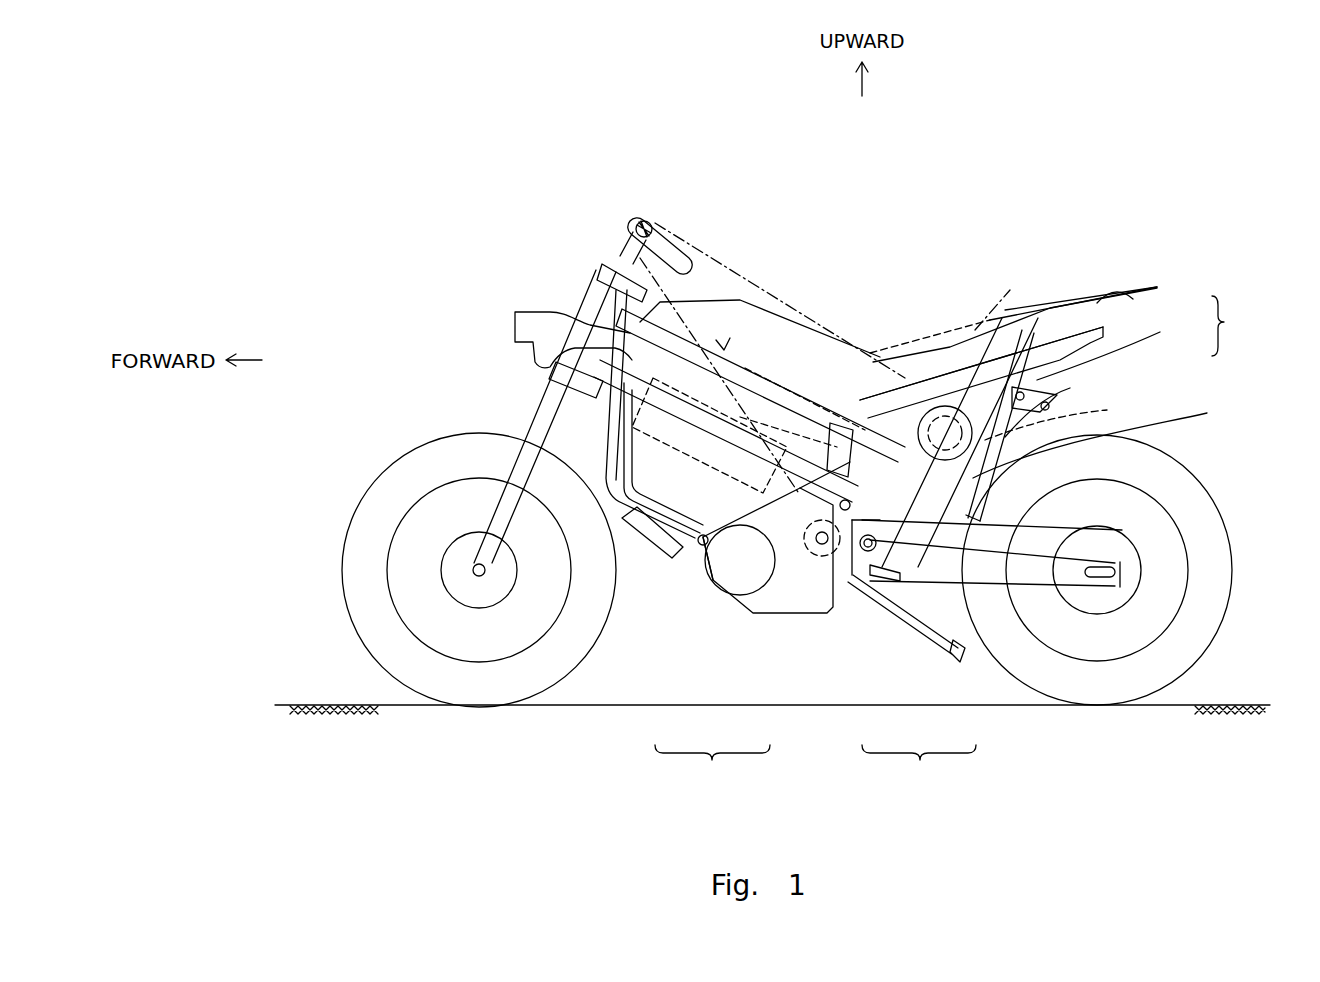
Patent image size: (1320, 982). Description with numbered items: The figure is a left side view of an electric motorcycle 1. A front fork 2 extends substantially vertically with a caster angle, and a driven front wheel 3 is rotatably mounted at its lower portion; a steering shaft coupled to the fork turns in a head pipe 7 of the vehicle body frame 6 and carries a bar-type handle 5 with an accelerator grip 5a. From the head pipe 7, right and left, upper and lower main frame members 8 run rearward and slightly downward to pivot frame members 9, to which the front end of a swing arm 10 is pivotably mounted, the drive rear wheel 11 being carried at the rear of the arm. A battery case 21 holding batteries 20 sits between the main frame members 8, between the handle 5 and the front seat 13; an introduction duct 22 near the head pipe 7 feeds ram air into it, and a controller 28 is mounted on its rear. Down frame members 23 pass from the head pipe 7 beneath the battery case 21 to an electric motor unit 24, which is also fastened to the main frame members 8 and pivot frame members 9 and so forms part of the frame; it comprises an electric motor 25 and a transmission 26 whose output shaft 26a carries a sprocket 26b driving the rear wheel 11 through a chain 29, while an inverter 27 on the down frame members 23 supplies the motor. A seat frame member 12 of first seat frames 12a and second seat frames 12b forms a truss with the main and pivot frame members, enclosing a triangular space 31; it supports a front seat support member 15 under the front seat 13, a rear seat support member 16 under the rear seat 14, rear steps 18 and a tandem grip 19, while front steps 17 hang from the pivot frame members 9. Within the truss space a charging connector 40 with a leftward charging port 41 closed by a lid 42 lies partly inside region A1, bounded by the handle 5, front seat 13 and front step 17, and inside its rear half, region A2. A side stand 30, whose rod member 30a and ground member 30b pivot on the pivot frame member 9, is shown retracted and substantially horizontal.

The electric motorcycle 1 is at (447, 215).
The front fork 2 is at (530, 422).
The front wheel 3 is at (370, 505).
The handle 5 is at (645, 225).
The accelerator grip 5a is at (668, 224).
The vehicle body frame 6 is at (725, 348).
The head pipe 7 is at (606, 282).
The main frame members 8 is at (800, 455).
The pivot frame members 9 is at (840, 578).
The swing arm 10 is at (900, 575).
The rear wheel 11 is at (1217, 507).
The seat frame member 12 is at (1226, 322).
The first seat frames 12a is at (1103, 332).
The second seat frames 12b is at (1110, 340).
The front seat 13 is at (884, 378).
The rear seat 14 is at (1040, 300).
The front seat support member 15 is at (927, 383).
The rear seat support member 16 is at (1060, 317).
The front steps 17 is at (863, 580).
The rear steps 18 is at (1070, 388).
The tandem grip 19 is at (1128, 283).
The batteries 20 is at (760, 420).
The battery case 21 is at (805, 330).
The introduction duct 22 is at (540, 312).
The down frame members 23 is at (617, 500).
The electric motor unit 24 is at (712, 760).
The electric motor 25 is at (733, 583).
The transmission 26 is at (783, 603).
The output shaft 26a is at (820, 560).
The sprocket 26b is at (783, 562).
The inverter 27 is at (652, 540).
The controller 28 is at (928, 477).
The chain 29 is at (925, 640).
The side stand 30 is at (920, 760).
The rod member 30a is at (925, 605).
The ground member 30b is at (970, 600).
The space 31 is at (997, 320).
The charging connector 40 is at (1207, 414).
The charging port 41 is at (1107, 410).
The lid 42 is at (958, 406).
The region A1 is at (710, 241).
The region A2 is at (990, 306).